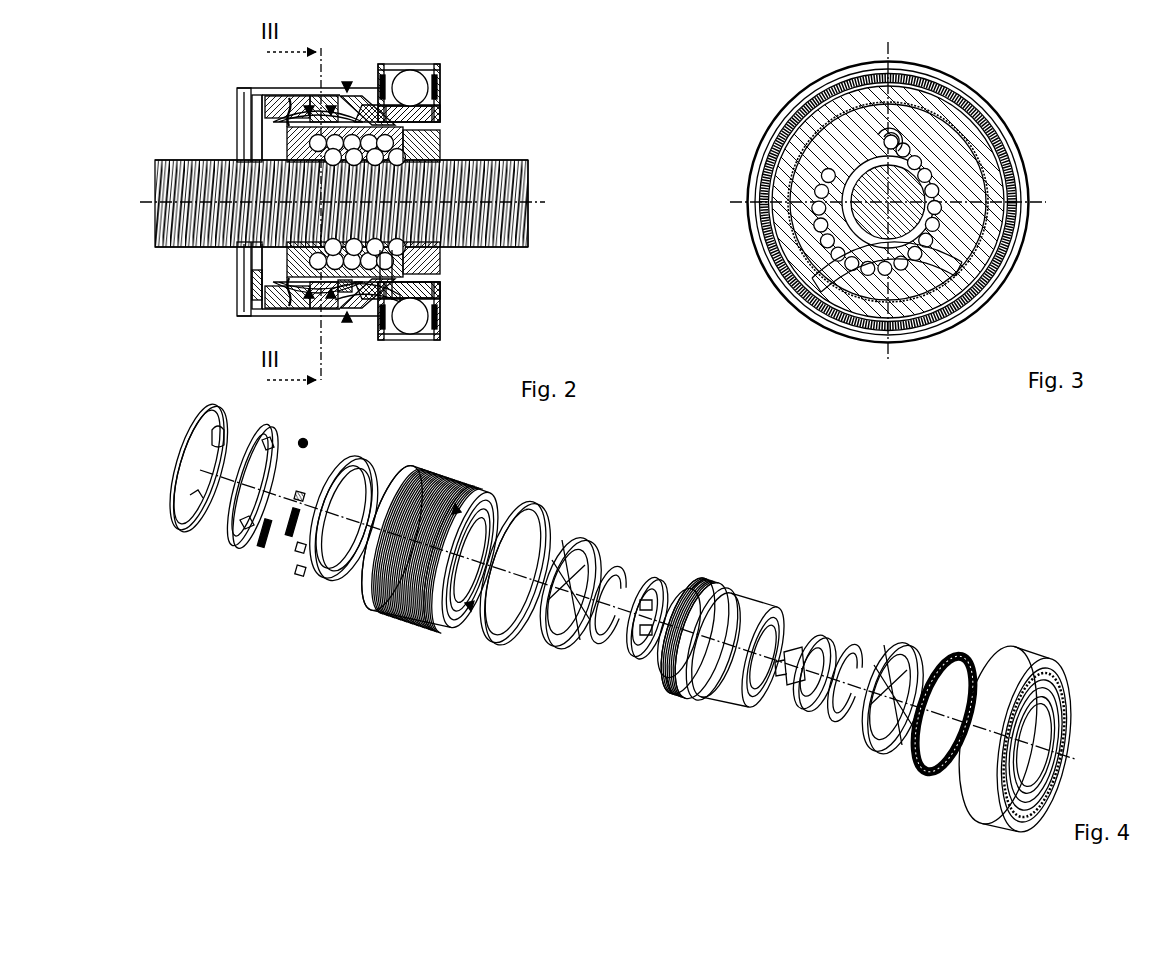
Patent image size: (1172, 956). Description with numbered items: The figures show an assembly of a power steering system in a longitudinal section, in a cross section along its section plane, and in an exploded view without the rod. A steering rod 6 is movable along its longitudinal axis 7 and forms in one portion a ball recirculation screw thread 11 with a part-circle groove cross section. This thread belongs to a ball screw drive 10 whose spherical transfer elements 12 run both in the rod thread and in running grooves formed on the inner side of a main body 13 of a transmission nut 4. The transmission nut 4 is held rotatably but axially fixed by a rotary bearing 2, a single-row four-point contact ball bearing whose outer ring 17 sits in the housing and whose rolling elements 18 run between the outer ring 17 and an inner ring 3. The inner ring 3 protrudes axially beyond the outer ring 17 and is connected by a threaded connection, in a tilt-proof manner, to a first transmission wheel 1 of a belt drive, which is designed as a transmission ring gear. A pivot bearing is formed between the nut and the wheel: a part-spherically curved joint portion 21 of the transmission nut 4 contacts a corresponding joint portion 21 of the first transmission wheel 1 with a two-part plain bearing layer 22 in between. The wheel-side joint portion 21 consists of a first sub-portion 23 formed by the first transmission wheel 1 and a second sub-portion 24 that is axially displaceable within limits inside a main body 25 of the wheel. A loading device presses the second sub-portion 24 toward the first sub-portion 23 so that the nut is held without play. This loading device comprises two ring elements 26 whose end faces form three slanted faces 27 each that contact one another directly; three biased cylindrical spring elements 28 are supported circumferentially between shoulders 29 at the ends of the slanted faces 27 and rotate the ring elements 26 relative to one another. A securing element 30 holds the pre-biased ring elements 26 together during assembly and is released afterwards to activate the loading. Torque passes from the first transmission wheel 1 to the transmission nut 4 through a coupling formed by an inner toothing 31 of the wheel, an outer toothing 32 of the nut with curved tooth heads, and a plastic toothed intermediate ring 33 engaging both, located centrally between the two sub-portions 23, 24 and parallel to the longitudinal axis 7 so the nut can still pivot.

In FIG. 2, the first transmission wheel 1 is at (231, 118).
In FIG. 4, the first transmission wheel 1 is at (384, 616).
In FIG. 2, the rotary bearing 2 is at (444, 61).
In FIG. 4, the rotary bearing 2 is at (1051, 652).
In FIG. 2, the inner ring 3 is at (430, 118).
In FIG. 4, the inner ring 3 is at (1060, 690).
In FIG. 2, the transmission nut 4 is at (441, 262).
In FIG. 4, the transmission nut 4 is at (765, 580).
In FIG. 2, the steering rod 6 is at (163, 165).
In FIG. 3, the steering rod 6 is at (966, 270).
In FIG. 2, the longitudinal axis 7 is at (148, 200).
In FIG. 4, the longitudinal axis 7 is at (1056, 752).
In FIG. 2, the ball screw drive 10 is at (339, 202).
In FIG. 2, the ball recirculation screw thread 11 is at (520, 250).
In FIG. 2, the spherical transfer elements 12 is at (386, 302).
In FIG. 3, the spherical transfer elements 12 is at (806, 292).
In FIG. 2, the main body 13 is at (395, 300).
In FIG. 3, the main body 13 is at (793, 255).
In FIG. 4, the main body 13 is at (772, 615).
In FIG. 2, the outer ring 17 is at (416, 86).
In FIG. 3, the outer ring 17 is at (964, 98).
In FIG. 4, the outer ring 17 is at (1024, 660).
In FIG. 2, the rolling elements 18 is at (440, 93).
In FIG. 2, the joint portion 21 is at (345, 292).
In FIG. 4, the joint portion 21 is at (710, 581).
In FIG. 2, the plain bearing layer 22 is at (288, 100).
In FIG. 4, the plain bearing layer 22 is at (586, 550).
In FIG. 2, the first sub-portion 23 is at (356, 96).
In FIG. 4, the first sub-portion 23 is at (453, 622).
In FIG. 2, the second sub-portion 24 is at (310, 105).
In FIG. 4, the second sub-portion 24 is at (343, 562).
In FIG. 2, the main body 25 is at (245, 140).
In FIG. 3, the main body 25 is at (779, 128).
In FIG. 4, the main body 25 is at (431, 600).
In FIG. 2, the ring elements 26 is at (262, 270).
In FIG. 4, the ring elements 26 is at (236, 548).
In FIG. 4, the slanted faces 27 is at (296, 549).
In FIG. 4, the spring elements 28 is at (292, 506).
In FIG. 4, the shoulders 29 is at (263, 427).
In FIG. 4, the securing element 30 is at (299, 489).
In FIG. 4, the inner toothing 31 is at (492, 508).
In FIG. 4, the outer toothing 32 is at (681, 692).
In FIG. 2, the toothed intermediate ring 33 is at (323, 108).
In FIG. 3, the toothed intermediate ring 33 is at (792, 170).
In FIG. 4, the toothed intermediate ring 33 is at (960, 657).